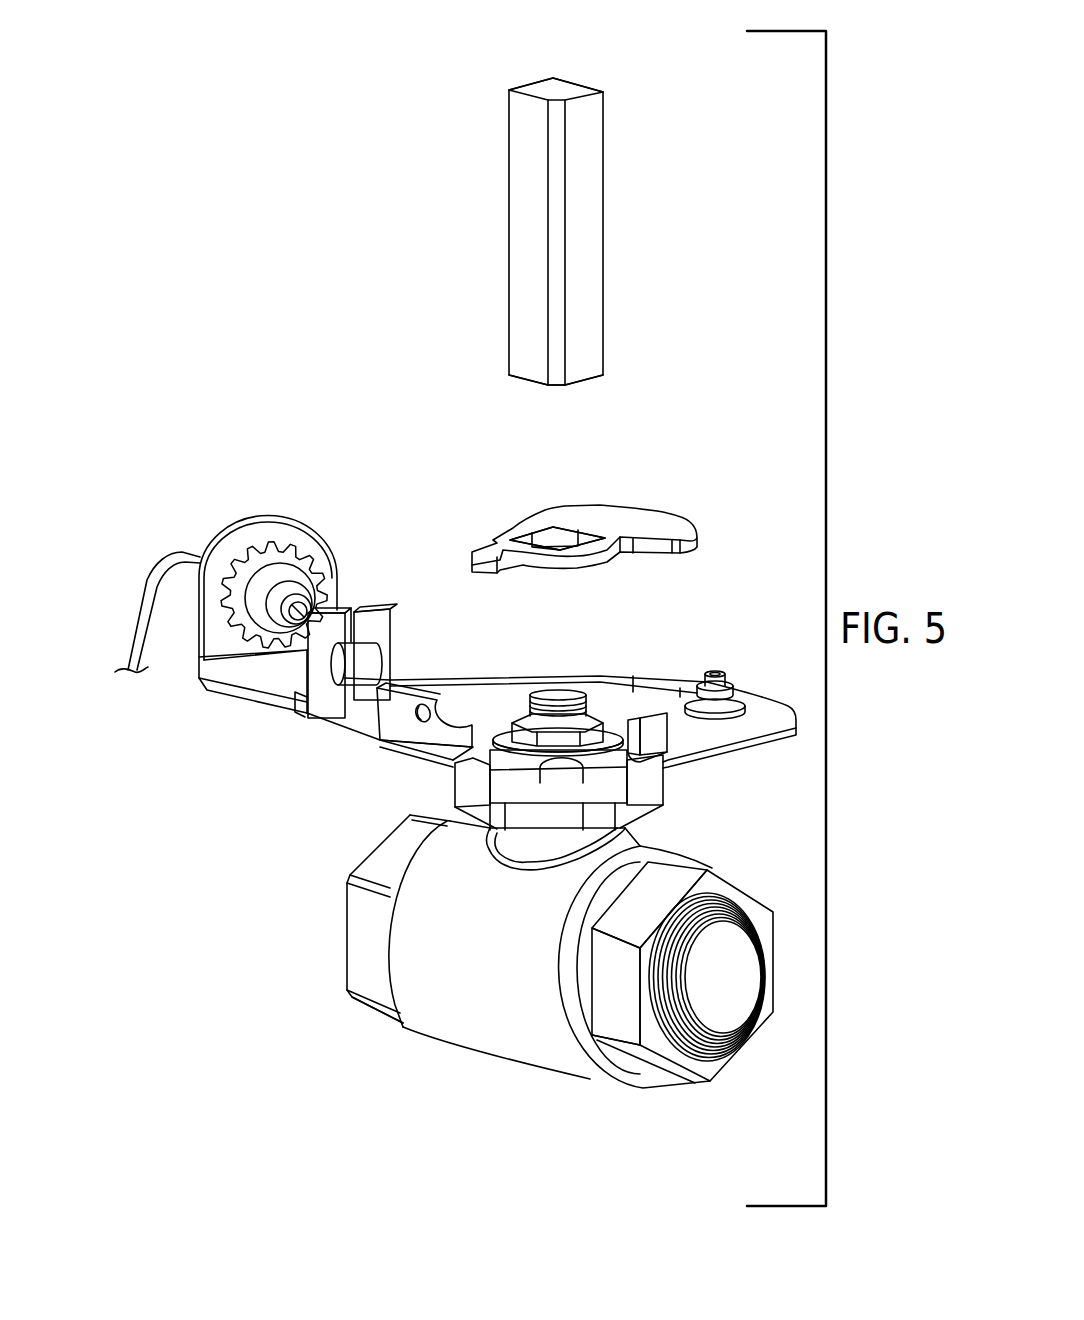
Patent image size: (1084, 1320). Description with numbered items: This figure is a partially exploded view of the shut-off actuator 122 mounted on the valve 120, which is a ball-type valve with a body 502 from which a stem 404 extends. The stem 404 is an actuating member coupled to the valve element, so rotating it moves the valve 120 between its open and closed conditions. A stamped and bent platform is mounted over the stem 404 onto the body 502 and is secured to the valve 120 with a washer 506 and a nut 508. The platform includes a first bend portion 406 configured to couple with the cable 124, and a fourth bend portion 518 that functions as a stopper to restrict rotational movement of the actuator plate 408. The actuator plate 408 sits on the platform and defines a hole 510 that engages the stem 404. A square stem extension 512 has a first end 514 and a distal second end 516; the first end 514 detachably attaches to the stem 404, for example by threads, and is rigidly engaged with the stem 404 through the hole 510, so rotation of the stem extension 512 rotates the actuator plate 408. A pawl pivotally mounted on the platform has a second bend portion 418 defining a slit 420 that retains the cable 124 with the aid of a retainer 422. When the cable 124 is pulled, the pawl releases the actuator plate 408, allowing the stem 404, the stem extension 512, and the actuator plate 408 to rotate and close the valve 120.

The valve 120 is at (545, 1108).
The shut-off actuator 122 is at (212, 72).
The cable 124 is at (148, 578).
The stem 404 is at (563, 712).
The first bend portion 406 is at (207, 625).
The actuator plate 408 is at (676, 527).
The second bend portion 418 is at (313, 712).
The slit 420 is at (350, 606).
The retainer 422 is at (352, 718).
The body 502 is at (437, 1001).
The washer 506 is at (470, 745).
The nut 508 is at (520, 717).
The hole 510 is at (546, 541).
The stem extension 512 is at (590, 245).
The first end 514 is at (597, 343).
The second end 516 is at (605, 140).
The fourth bend portion 518 is at (660, 737).